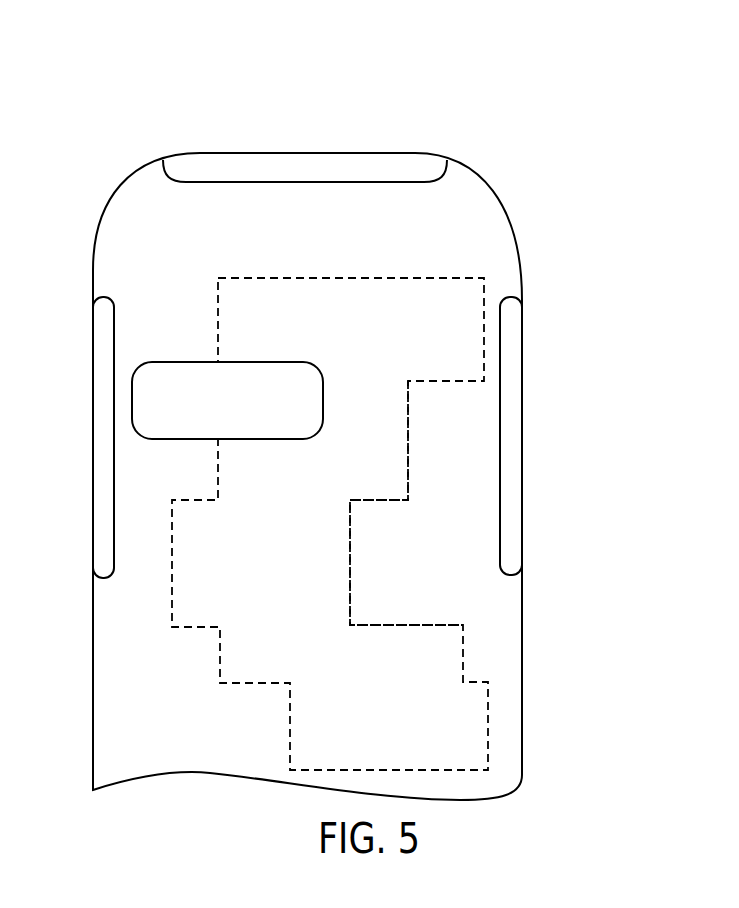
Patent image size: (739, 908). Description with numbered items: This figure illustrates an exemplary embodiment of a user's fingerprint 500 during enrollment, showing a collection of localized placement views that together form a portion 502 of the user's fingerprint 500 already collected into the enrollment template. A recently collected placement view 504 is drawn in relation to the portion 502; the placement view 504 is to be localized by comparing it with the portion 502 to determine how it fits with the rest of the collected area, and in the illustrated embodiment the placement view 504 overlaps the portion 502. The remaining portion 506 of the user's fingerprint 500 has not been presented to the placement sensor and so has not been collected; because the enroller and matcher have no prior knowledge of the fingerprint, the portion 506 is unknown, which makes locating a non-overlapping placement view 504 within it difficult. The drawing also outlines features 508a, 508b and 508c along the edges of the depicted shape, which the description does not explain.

The electronic device housing 500 is at (640, 78).
The antenna region 502 is at (436, 290).
The window opening 504 is at (181, 361).
The hatched conductive region 506 is at (440, 552).
The left side slot 508a is at (103, 355).
The top slot 508b is at (352, 163).
The right side slot 508c is at (511, 417).